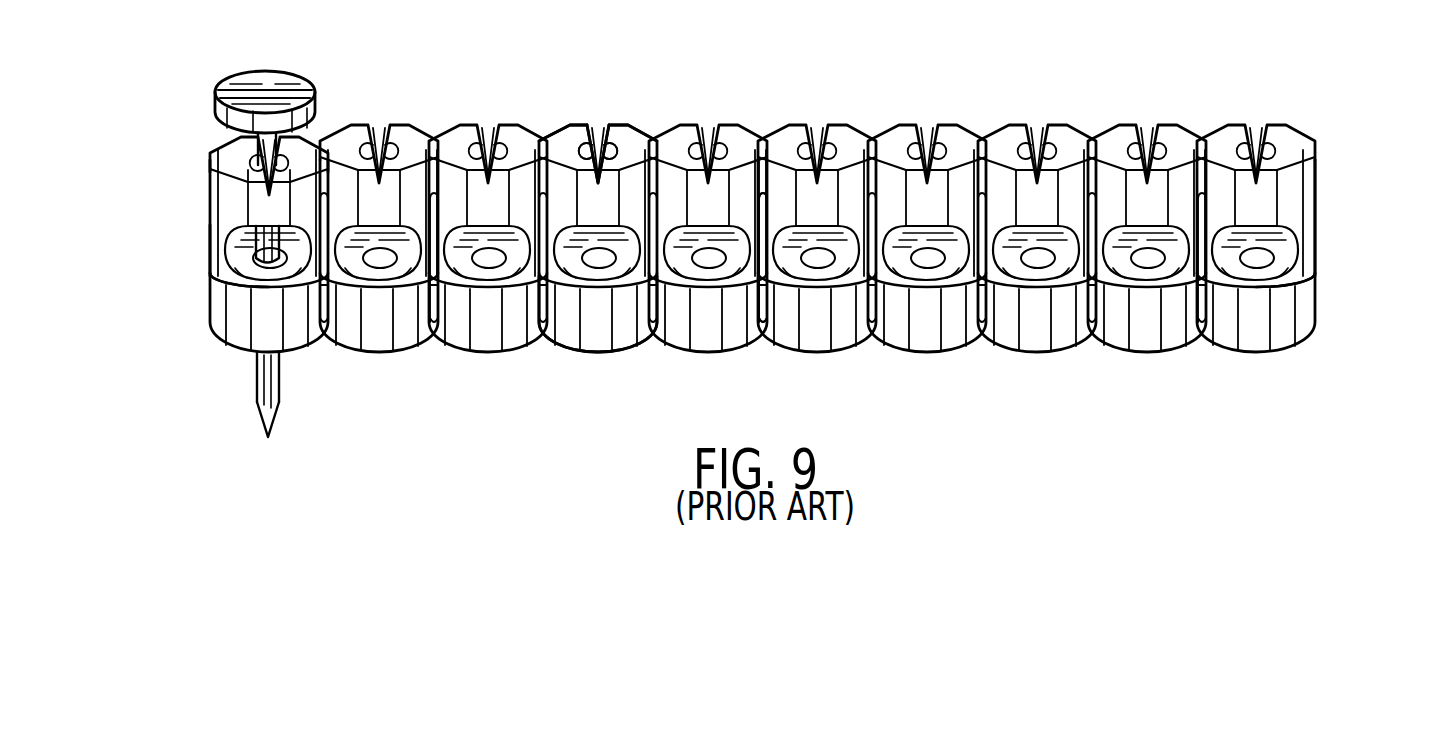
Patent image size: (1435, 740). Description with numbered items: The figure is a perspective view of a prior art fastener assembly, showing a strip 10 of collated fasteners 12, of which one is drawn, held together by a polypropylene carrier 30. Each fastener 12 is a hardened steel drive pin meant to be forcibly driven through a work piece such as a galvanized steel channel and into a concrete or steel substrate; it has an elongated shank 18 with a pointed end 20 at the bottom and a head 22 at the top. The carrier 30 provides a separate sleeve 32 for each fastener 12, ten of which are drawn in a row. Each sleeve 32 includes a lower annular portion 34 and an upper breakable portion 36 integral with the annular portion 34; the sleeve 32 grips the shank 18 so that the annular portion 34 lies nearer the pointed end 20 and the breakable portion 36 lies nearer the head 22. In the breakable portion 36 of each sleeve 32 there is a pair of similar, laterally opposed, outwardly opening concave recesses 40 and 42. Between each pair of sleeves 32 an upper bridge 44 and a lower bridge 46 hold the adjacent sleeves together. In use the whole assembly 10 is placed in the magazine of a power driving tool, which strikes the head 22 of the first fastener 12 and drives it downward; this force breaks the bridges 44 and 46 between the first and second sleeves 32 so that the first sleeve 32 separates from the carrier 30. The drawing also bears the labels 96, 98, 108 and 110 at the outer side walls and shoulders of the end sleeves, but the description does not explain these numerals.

The strip of collated fasteners 10 is at (200, 148).
The fastener 12 is at (318, 92).
The shank 18 is at (270, 380).
The pointed end 20 is at (278, 415).
The head 22 is at (250, 83).
The carrier 30 is at (202, 208).
The sleeve 32 is at (222, 354).
The lower annular portion 34 is at (590, 344).
The upper breakable portion 36 is at (620, 137).
The concave recess 40 is at (597, 137).
The concave recess 42 is at (577, 150).
The upper bridge 44 is at (763, 143).
The lower bridge 46 is at (763, 332).
The side wall 96 is at (207, 253).
The outer side wall 98 is at (1322, 218).
The shoulder of end sleeve 108 is at (1318, 285).
The shoulder of first sleeve 110 is at (209, 282).